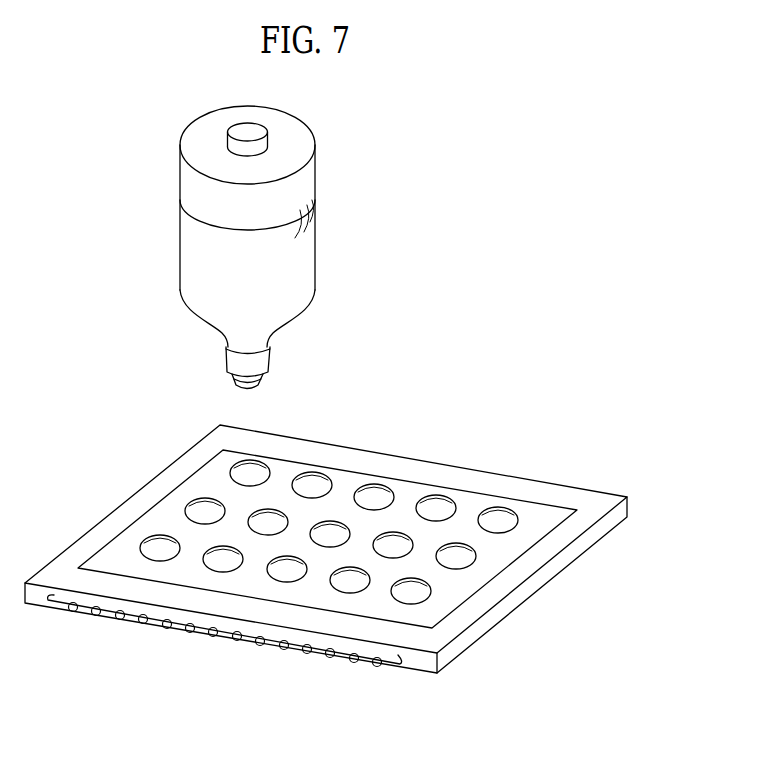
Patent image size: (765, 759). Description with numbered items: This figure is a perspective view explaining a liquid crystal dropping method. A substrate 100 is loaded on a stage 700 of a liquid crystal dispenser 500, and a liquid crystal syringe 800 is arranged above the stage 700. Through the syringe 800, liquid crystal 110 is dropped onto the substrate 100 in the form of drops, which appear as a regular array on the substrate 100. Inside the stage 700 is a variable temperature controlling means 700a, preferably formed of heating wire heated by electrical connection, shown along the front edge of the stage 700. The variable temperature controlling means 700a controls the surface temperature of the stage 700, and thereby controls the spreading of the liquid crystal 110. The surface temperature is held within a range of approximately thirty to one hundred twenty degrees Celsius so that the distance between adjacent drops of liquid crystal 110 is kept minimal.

The liquid crystal dispenser 500 is at (560, 253).
The liquid crystal syringe 800 is at (290, 272).
The stage 700 is at (508, 605).
The variable temperature controlling means 700a is at (307, 645).
The substrate 100 is at (540, 542).
The liquid crystal 110 is at (237, 474).